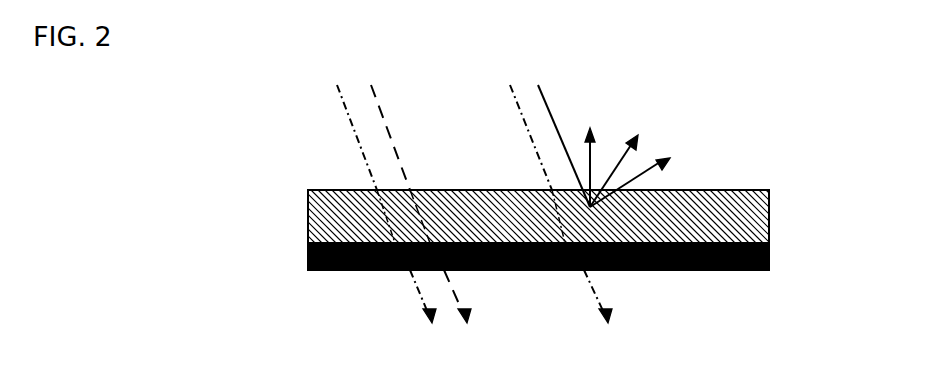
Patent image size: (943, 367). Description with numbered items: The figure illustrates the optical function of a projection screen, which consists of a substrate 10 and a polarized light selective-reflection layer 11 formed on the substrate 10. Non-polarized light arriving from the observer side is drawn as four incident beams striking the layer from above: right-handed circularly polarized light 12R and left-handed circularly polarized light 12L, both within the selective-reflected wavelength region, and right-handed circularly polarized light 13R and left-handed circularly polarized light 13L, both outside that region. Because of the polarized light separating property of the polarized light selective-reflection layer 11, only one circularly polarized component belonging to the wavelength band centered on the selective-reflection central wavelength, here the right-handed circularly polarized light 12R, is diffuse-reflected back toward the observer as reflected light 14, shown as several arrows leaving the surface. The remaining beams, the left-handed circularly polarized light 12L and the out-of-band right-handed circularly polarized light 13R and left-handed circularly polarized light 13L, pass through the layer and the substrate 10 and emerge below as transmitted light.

The substrate 10 is at (769, 257).
The polarized light selective-reflection layer 11 is at (740, 230).
The left-handed circularly polarized light within the selective-reflected wavelength 12L is at (537, 204).
The right-handed circularly polarized light within the selective-reflected wavelengt 12R is at (564, 146).
The left-handed circularly polarized light outside of the selective-reflected wavele 13L is at (364, 204).
The right-handed circularly polarized light outside of the selective-reflected wavel 13R is at (421, 204).
The reflected light 14 is at (677, 152).